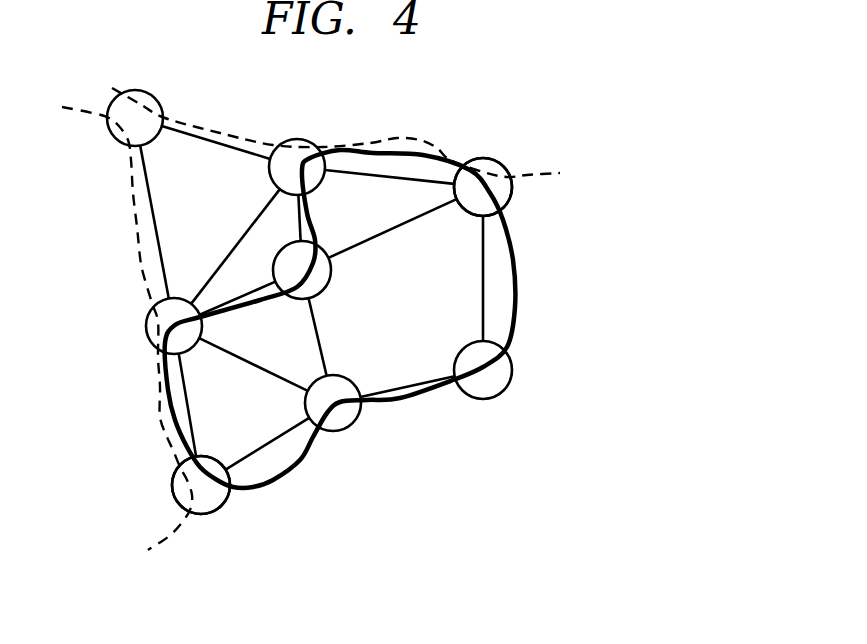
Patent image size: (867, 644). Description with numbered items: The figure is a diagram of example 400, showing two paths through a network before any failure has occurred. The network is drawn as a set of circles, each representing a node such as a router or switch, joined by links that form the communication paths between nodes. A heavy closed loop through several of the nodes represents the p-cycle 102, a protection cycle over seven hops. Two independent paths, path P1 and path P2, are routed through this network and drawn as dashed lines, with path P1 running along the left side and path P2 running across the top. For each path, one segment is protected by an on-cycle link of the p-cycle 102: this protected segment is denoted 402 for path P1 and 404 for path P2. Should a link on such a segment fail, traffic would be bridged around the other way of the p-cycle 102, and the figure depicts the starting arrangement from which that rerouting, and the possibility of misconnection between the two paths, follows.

The example 400 is at (376, 299).
The protected segment 402 is at (124, 426).
The protected segment 404 is at (431, 129).
The p-cycle 102 is at (518, 299).
The first path P1 is at (201, 506).
The second path P2 is at (517, 192).